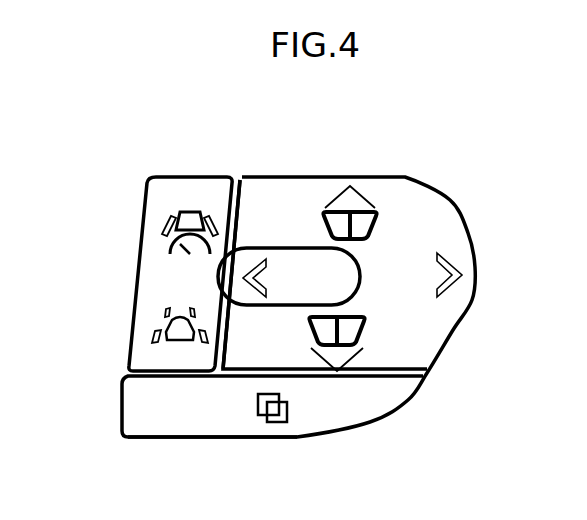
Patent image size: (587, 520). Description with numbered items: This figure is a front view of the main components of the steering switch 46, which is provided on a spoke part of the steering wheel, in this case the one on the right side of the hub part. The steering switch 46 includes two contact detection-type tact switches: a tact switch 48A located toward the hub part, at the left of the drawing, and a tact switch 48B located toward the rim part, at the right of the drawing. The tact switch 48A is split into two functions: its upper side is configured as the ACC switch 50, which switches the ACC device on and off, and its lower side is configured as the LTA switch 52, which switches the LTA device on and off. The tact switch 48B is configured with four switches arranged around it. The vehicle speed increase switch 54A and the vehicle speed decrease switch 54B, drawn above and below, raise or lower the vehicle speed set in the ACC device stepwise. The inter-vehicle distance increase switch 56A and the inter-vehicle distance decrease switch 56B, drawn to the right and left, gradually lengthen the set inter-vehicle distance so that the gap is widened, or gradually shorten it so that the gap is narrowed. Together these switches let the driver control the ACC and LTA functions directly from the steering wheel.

The steering switch 46 is at (426, 172).
The tact switch 48A is at (136, 285).
The tact switch 48B is at (455, 339).
The ACC switch 50 is at (195, 188).
The LTA switch 52 is at (142, 358).
The vehicle speed increase switch 54A is at (352, 178).
The vehicle speed decrease switch 54B is at (360, 358).
The inter-vehicle distance increase switch 56A is at (473, 268).
The inter-vehicle distance decrease switch 56B is at (244, 307).